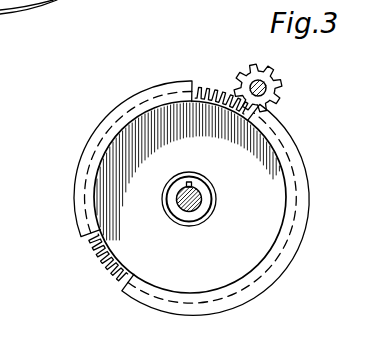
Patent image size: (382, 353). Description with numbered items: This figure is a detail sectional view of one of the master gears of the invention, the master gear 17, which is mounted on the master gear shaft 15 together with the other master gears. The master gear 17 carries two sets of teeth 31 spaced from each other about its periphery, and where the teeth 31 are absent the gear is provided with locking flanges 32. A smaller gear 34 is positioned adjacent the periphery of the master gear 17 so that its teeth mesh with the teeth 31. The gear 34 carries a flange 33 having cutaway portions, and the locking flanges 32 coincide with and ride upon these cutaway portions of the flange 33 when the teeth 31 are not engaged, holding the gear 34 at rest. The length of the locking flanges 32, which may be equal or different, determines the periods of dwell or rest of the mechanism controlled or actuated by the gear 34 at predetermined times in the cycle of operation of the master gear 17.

The master gear shaft 15 is at (188, 221).
The master gear 17 is at (231, 271).
The teeth 31 is at (195, 90).
The locking flanges 32 is at (100, 124).
The flange 33 is at (282, 101).
The gear 34 is at (263, 70).